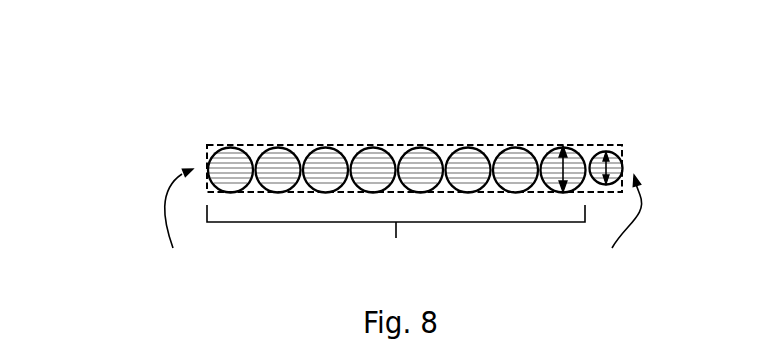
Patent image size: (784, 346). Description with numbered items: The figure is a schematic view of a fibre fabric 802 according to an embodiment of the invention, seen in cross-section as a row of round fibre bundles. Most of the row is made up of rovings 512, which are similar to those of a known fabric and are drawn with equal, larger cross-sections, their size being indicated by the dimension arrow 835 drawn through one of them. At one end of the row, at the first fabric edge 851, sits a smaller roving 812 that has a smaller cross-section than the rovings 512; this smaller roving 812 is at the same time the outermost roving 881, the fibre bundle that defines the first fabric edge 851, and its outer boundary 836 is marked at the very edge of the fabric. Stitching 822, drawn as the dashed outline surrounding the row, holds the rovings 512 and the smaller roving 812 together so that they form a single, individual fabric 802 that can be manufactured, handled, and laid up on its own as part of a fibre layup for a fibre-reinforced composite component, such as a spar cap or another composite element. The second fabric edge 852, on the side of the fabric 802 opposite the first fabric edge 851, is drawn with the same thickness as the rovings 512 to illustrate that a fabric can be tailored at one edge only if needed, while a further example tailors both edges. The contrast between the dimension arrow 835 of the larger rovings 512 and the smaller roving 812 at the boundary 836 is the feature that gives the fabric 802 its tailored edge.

The fabric 802 is at (70, 38).
The stitching 822 is at (447, 145).
The large coil diameter 835 is at (560, 168).
The smaller roving 812 is at (607, 146).
The outermost roving 881 is at (622, 158).
The end of coil 836 is at (623, 170).
The first fabric edge 851 is at (612, 230).
The second fabric edge 852 is at (173, 226).
The rovings 512 is at (396, 243).